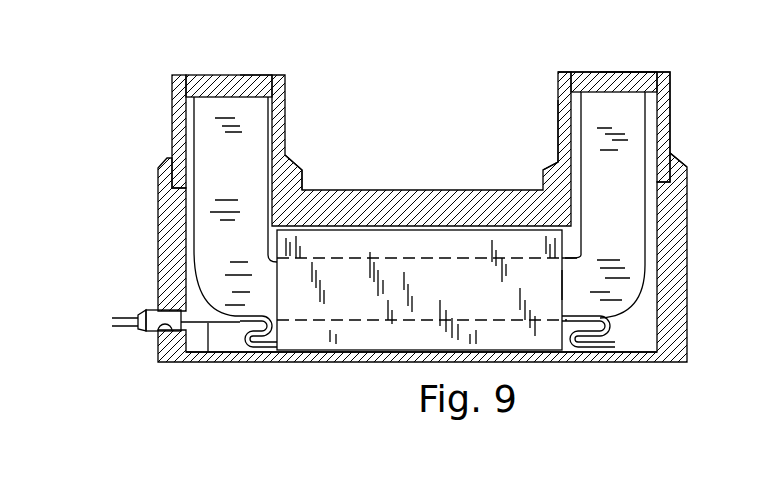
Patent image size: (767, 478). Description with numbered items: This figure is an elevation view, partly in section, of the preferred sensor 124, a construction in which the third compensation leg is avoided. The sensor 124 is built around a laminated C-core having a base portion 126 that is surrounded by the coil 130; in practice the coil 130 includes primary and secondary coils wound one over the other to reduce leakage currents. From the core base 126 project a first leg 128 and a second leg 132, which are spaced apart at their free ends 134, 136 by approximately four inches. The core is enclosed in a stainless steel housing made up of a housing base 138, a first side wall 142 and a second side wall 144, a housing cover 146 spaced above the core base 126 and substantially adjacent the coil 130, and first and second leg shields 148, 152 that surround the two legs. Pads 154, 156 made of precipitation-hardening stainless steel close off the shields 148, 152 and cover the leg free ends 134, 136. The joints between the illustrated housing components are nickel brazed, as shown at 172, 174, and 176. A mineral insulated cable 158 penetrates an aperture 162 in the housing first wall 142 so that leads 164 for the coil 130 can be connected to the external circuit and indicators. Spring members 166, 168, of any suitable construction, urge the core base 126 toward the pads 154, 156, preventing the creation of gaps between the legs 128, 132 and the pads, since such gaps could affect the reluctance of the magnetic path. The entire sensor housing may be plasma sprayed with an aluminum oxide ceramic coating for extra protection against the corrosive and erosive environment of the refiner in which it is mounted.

The sensor 124 is at (673, 97).
The base portion 126 is at (563, 293).
The first leg 128 is at (205, 148).
The coil 130 is at (370, 338).
The second leg 132 is at (636, 130).
The free end 134 is at (218, 98).
The free end 136 is at (593, 91).
The housing base 138 is at (550, 360).
The first side wall 142 is at (158, 210).
The second side wall 144 is at (688, 203).
The housing cover 146 is at (476, 190).
The first leg shield 148 is at (174, 120).
The second leg shield 152 is at (558, 100).
The pad 154 is at (255, 76).
The pad 156 is at (628, 72).
The mineral insulated cable 158 is at (128, 313).
The aperture 162 is at (160, 332).
The leads 164 is at (208, 355).
The spring member 166 is at (262, 350).
The spring member 168 is at (615, 348).
The nickel brazed joint 172 is at (663, 72).
The nickel brazed joint 174 is at (160, 308).
The nickel brazed joint 176 is at (287, 150).